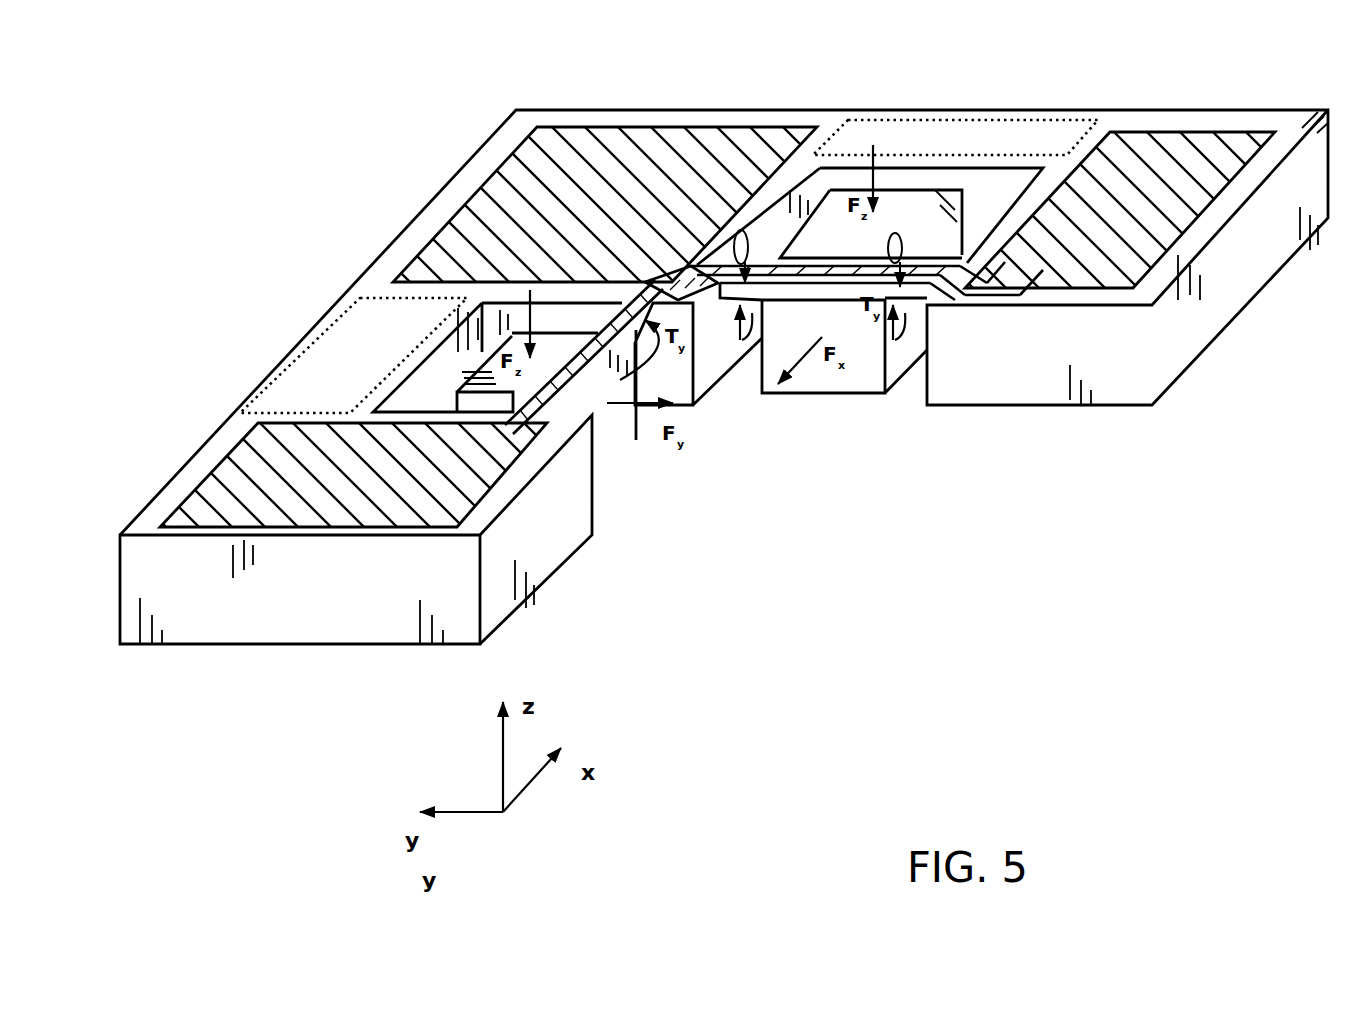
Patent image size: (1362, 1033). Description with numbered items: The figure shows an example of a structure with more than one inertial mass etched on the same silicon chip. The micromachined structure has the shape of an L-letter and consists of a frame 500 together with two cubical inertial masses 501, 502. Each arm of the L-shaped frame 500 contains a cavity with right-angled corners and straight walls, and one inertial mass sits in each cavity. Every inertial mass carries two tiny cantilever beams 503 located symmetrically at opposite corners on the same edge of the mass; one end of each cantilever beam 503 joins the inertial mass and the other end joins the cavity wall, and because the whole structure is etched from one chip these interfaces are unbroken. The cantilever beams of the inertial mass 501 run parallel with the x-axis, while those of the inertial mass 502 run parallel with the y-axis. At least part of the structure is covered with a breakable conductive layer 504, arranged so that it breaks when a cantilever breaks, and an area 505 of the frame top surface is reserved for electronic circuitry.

The frame 500 is at (192, 641).
The inertial mass 501 is at (620, 428).
The inertial mass 502 is at (835, 367).
The cantilever beam 503 is at (943, 303).
The conductive layer 504 is at (530, 150).
The area reserved for electronic circuitry 505 is at (360, 318).